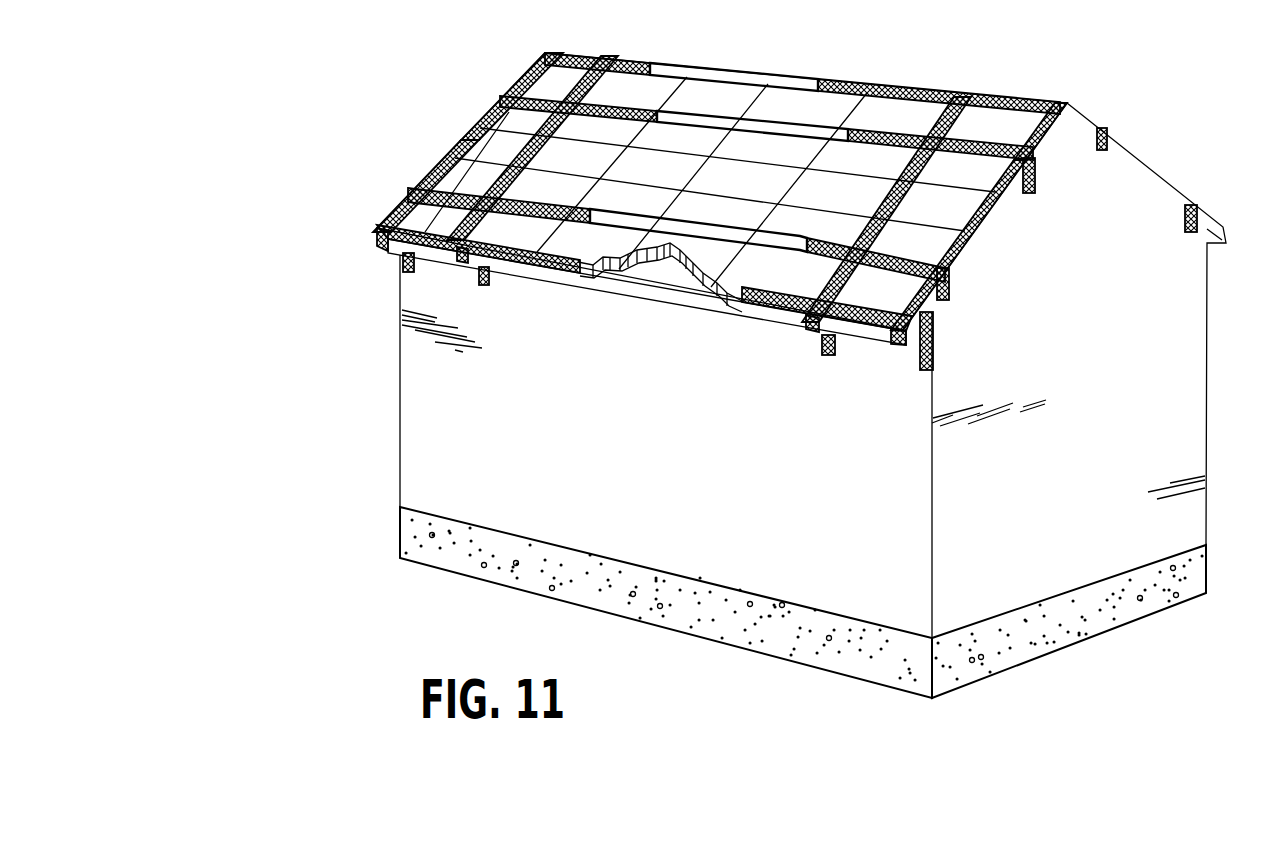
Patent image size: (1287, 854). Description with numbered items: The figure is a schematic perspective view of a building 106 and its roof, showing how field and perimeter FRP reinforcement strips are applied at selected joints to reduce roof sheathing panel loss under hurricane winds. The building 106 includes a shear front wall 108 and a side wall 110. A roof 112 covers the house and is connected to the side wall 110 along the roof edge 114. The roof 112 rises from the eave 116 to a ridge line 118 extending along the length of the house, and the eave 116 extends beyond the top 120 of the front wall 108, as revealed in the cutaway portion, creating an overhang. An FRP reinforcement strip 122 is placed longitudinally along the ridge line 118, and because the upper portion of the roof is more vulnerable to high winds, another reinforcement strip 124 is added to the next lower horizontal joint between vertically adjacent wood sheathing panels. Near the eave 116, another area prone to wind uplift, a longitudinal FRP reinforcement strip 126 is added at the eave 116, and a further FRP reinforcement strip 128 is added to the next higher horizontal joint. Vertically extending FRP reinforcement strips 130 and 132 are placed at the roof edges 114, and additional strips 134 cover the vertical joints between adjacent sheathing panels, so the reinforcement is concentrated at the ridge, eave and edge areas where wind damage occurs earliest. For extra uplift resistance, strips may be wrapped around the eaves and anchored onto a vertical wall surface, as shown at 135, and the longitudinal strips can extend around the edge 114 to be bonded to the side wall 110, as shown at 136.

The building 106 is at (334, 66).
The shear front wall 108 is at (680, 492).
The side wall 110 is at (1133, 373).
The roof 112 is at (516, 66).
The roof edge 114 is at (1070, 115).
The eave 116 is at (779, 314).
The ridge line 118 is at (683, 57).
The top of the front wall 120 is at (655, 270).
The FRP reinforcement strip 122 is at (840, 75).
The reinforcement strip 124 is at (868, 125).
The longitudinal FRP reinforcement strip 126 is at (528, 210).
The FRP reinforcement strip 128 is at (492, 282).
The vertically extending FRP reinforcement strip 130 is at (993, 213).
The vertically extending FRP reinforcement strip 132 is at (462, 130).
The additional strips 134 is at (548, 158).
The wrapped FRP reinforcement strip anchor 135 is at (398, 262).
The extended longitudinal reinforcement strip 136 is at (1037, 172).